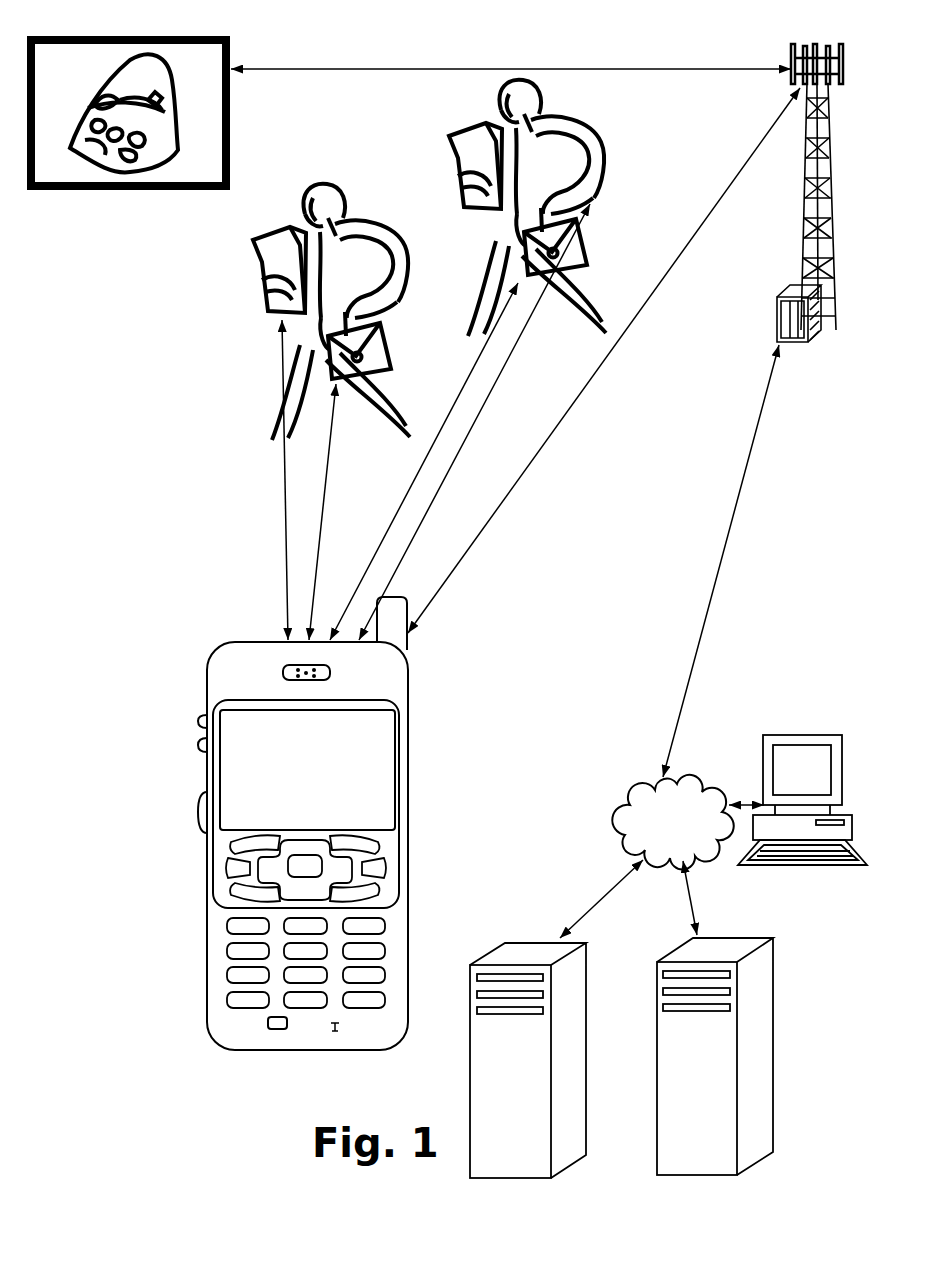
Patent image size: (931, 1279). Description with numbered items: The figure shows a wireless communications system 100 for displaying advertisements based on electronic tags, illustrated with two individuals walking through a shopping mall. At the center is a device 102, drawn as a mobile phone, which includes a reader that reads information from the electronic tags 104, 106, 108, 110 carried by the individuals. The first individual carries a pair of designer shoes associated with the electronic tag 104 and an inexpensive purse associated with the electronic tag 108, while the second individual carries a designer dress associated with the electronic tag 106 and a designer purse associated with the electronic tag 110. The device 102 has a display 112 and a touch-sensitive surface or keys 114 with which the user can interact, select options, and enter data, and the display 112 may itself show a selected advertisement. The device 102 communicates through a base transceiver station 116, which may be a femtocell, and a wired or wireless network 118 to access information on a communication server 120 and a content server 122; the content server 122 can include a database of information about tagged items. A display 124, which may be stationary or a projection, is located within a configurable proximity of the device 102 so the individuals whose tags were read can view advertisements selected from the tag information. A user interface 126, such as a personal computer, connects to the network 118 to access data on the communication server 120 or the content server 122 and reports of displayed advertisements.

The wireless communications system 100 is at (442, 40).
The device 102 is at (305, 840).
The electronic tag 104 is at (262, 313).
The electronic tag 106 is at (600, 175).
The electronic tag 108 is at (394, 333).
The electronic tag 110 is at (589, 248).
The display 112 is at (389, 752).
The touch-sensitive surface or keys 114 is at (257, 927).
The base transceiver station 116 is at (802, 203).
The network 118 is at (630, 852).
The communication server 120 is at (473, 1033).
The content server 122 is at (661, 1013).
The display 124 is at (232, 117).
The user interface 126 is at (822, 725).